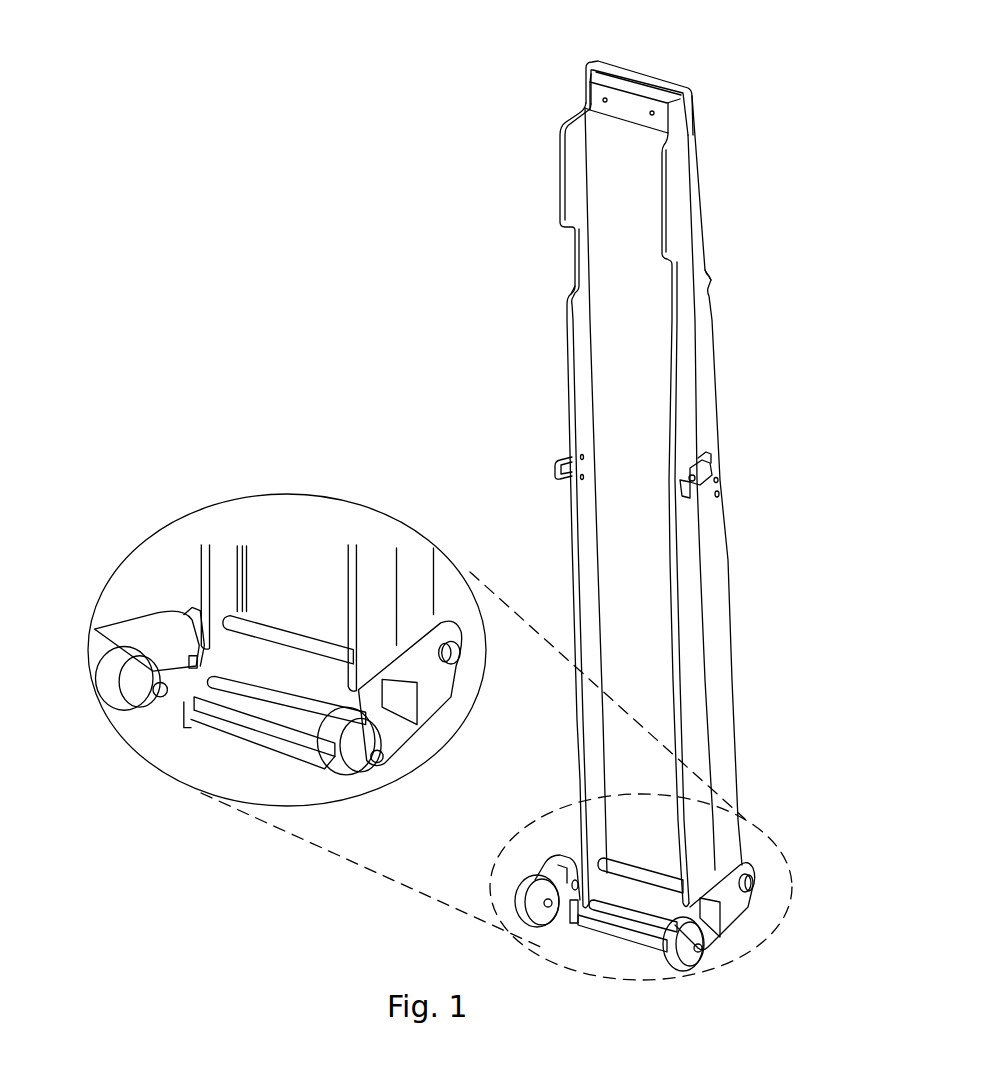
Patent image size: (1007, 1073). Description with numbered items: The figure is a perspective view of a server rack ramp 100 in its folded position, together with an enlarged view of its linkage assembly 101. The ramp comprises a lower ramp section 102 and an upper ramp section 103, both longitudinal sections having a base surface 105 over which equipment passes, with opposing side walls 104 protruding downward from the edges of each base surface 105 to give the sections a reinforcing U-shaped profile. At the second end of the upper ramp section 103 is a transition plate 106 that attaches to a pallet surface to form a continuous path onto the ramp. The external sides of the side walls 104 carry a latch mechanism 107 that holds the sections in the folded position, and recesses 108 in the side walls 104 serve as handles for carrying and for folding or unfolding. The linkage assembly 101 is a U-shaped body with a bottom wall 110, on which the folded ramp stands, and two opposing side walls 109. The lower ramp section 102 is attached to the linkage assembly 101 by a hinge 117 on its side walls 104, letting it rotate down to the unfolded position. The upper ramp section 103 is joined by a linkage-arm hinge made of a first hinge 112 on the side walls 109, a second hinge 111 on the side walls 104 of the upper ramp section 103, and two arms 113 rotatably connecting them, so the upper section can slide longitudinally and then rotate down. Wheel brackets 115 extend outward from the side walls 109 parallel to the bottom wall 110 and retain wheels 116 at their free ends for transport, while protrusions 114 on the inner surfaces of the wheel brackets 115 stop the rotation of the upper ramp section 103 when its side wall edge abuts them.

The server rack ramp 100 is at (492, 113).
The linkage assembly 101 is at (755, 884).
The lower ramp section 102 is at (410, 557).
The upper ramp section 103 is at (373, 555).
The side walls 104 is at (575, 197).
The base surface 105 is at (605, 412).
The transition plate 106 is at (633, 92).
The latch mechanism 107 is at (555, 468).
The recesses 108 is at (575, 262).
The side walls of the linkage assembly 109 is at (197, 597).
The bottom wall 110 is at (280, 720).
The second hinge 111 is at (280, 647).
The first hinge 112 is at (240, 688).
The arms 113 is at (183, 687).
The protrusions 114 is at (187, 653).
The wheel brackets 115 is at (150, 630).
The wheels 116 is at (127, 703).
The hinge 117 is at (450, 645).